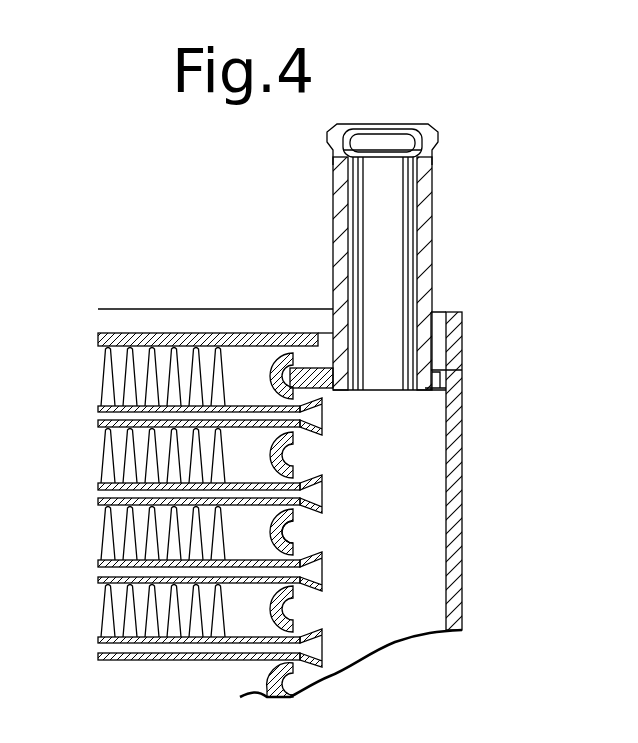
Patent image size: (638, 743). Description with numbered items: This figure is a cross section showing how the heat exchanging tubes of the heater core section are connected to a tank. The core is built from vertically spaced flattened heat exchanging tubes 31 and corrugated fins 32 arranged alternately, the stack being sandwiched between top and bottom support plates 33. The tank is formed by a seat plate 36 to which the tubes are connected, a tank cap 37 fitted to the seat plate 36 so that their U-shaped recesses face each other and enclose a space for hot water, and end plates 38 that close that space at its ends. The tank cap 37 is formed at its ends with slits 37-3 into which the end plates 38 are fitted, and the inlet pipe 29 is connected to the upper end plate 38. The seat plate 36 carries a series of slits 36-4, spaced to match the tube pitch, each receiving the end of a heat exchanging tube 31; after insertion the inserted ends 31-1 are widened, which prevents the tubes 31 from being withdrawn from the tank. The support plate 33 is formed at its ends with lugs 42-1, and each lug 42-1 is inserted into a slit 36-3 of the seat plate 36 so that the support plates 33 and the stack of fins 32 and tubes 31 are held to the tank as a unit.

The inlet pipe 29 is at (433, 226).
The heat exchanging tube 31 is at (100, 418).
The inserted end 31-1 is at (322, 665).
The corrugated fin 32 is at (112, 382).
The support plate 33 is at (122, 342).
The seat plate 36 is at (262, 690).
The slit 36-3 is at (262, 332).
The slit (tube insertion opening) 36-4 is at (306, 518).
The tank cap 37 is at (462, 502).
The slit 37-3 is at (450, 376).
The end plate 38 is at (441, 392).
The lug 42-1 is at (312, 312).